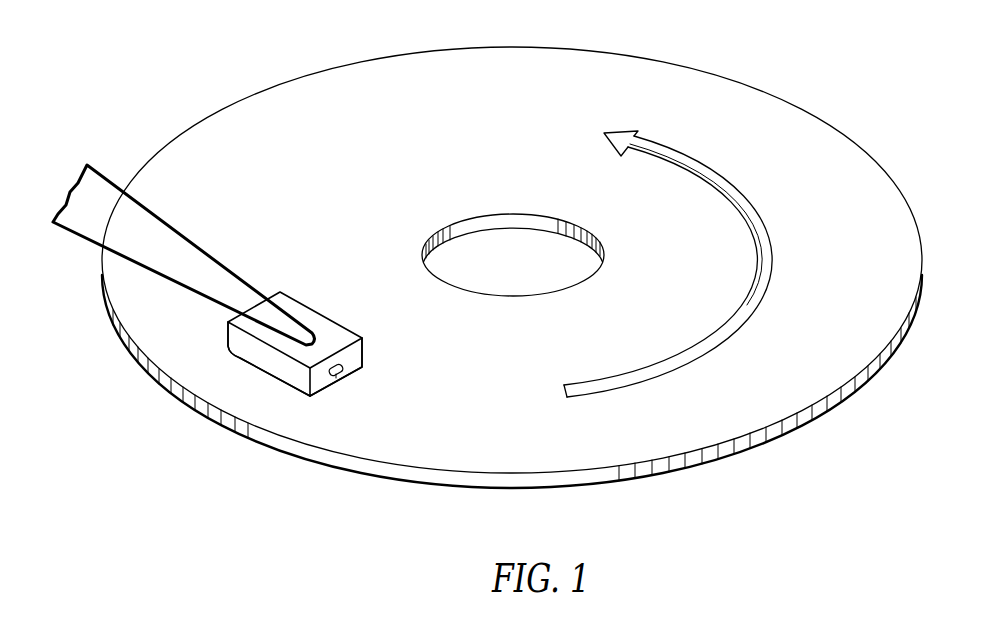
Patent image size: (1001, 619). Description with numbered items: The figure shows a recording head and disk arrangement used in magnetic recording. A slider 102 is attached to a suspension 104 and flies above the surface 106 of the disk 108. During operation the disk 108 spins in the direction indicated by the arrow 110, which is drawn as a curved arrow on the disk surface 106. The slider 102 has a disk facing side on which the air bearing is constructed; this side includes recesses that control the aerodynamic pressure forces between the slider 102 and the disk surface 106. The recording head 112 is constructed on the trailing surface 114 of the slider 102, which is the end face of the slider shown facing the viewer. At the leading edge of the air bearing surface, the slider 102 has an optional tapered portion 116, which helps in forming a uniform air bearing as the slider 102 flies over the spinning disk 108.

The slider 102 is at (295, 342).
The suspension 104 is at (101, 193).
The surface of the disk 106 is at (300, 103).
The disk 108 is at (795, 103).
The arrow 110 is at (775, 253).
The recording head 112 is at (338, 376).
The trailing surface 114 is at (356, 356).
The tapered portion 116 is at (232, 350).